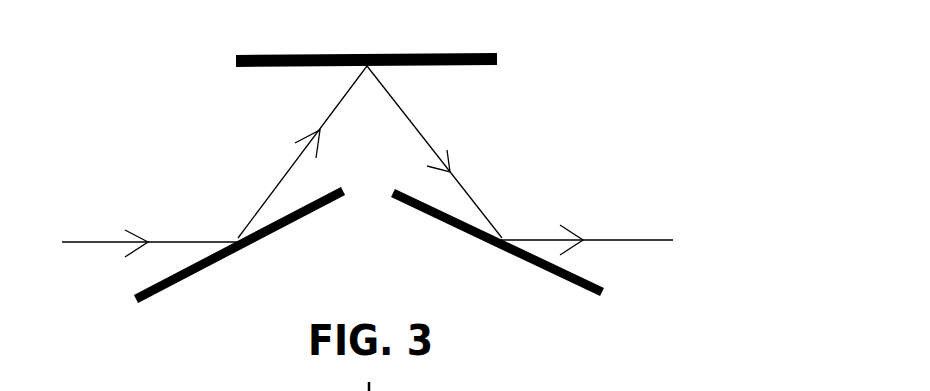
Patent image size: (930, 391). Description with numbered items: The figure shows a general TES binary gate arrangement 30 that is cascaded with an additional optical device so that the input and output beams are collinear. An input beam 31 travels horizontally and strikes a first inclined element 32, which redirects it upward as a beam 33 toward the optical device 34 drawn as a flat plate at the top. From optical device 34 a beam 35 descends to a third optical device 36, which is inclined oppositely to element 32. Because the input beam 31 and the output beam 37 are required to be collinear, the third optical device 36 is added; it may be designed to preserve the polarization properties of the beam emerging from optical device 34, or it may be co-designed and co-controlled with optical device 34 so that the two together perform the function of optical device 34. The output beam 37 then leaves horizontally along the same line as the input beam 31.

The optical delay line arrangement 30 is at (91, 38).
The input beam 31 is at (92, 242).
The first mirror 32 is at (243, 248).
The reflected beam toward retroreflector 33 is at (287, 172).
The optical device 34 is at (272, 55).
The reflected beam from plate 35 is at (452, 172).
The third optical device 36 is at (493, 247).
The output beam 37 is at (627, 240).